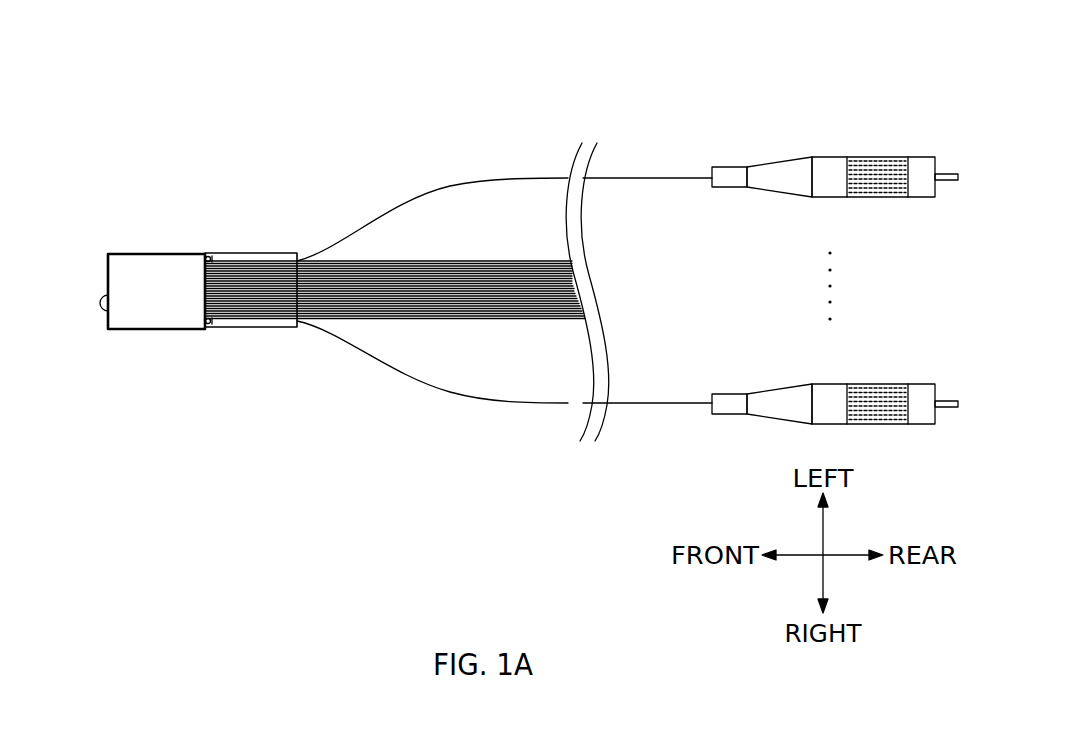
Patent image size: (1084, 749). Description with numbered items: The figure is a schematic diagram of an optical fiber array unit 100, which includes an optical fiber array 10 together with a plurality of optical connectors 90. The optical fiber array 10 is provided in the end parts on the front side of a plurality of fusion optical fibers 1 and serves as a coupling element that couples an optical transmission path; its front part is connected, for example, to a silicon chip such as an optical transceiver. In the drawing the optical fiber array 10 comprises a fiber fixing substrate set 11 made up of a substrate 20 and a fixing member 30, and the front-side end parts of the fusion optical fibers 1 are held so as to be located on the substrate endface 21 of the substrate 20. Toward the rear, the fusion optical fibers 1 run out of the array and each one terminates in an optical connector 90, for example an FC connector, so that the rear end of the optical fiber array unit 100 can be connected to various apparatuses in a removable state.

The optical fiber array unit 100 is at (535, 90).
The fusion optical fiber 1 is at (108, 265).
The optical fiber array 10 is at (205, 378).
The fiber fixing substrate set 11 is at (138, 178).
The fixing member 30 is at (157, 265).
The substrate 20 is at (247, 253).
The substrate endface 21 is at (112, 320).
The optical connector 90 is at (830, 165).